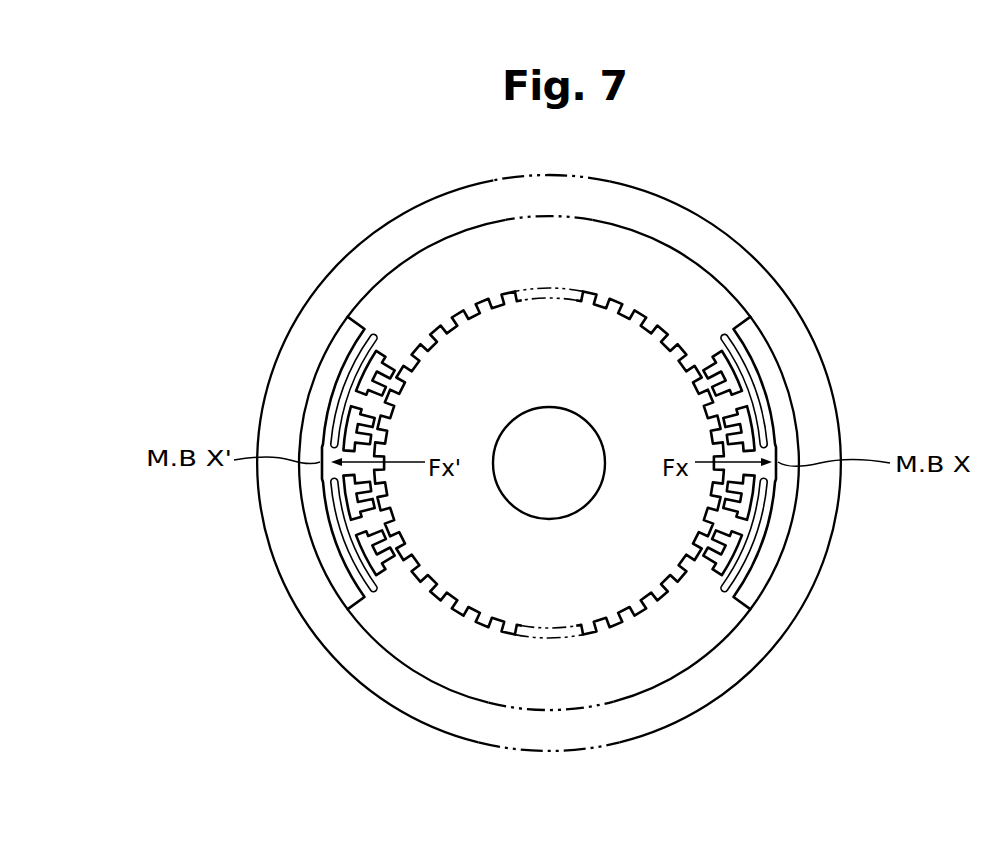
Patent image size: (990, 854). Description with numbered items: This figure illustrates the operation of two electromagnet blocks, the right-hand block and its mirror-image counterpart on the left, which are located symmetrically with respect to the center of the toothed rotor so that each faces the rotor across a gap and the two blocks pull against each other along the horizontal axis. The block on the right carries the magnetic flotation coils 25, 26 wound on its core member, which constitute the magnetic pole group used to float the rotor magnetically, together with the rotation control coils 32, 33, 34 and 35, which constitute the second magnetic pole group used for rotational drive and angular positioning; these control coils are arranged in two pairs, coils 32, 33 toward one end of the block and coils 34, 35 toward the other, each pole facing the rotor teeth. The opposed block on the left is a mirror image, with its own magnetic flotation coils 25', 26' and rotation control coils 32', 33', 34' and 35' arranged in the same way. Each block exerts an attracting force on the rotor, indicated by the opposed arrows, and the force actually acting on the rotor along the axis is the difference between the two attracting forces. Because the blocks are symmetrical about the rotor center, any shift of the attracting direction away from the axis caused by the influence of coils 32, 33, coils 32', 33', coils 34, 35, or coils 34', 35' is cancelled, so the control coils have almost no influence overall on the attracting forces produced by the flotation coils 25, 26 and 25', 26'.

The magnetic flotation coil 25 is at (811, 390).
The magnetic flotation coil 26 is at (812, 534).
The rotation control coil 32 is at (793, 342).
The rotation control coil 33 is at (817, 426).
The rotation control coil 34 is at (821, 509).
The rotation control coil 35 is at (792, 582).
The magnetic flotation coil 25' is at (286, 534).
The magnetic flotation coil 26' is at (292, 390).
The rotation control coil 32' is at (304, 565).
The rotation control coil 33' is at (286, 497).
The rotation control coil 34' is at (286, 422).
The rotation control coil 35' is at (315, 344).